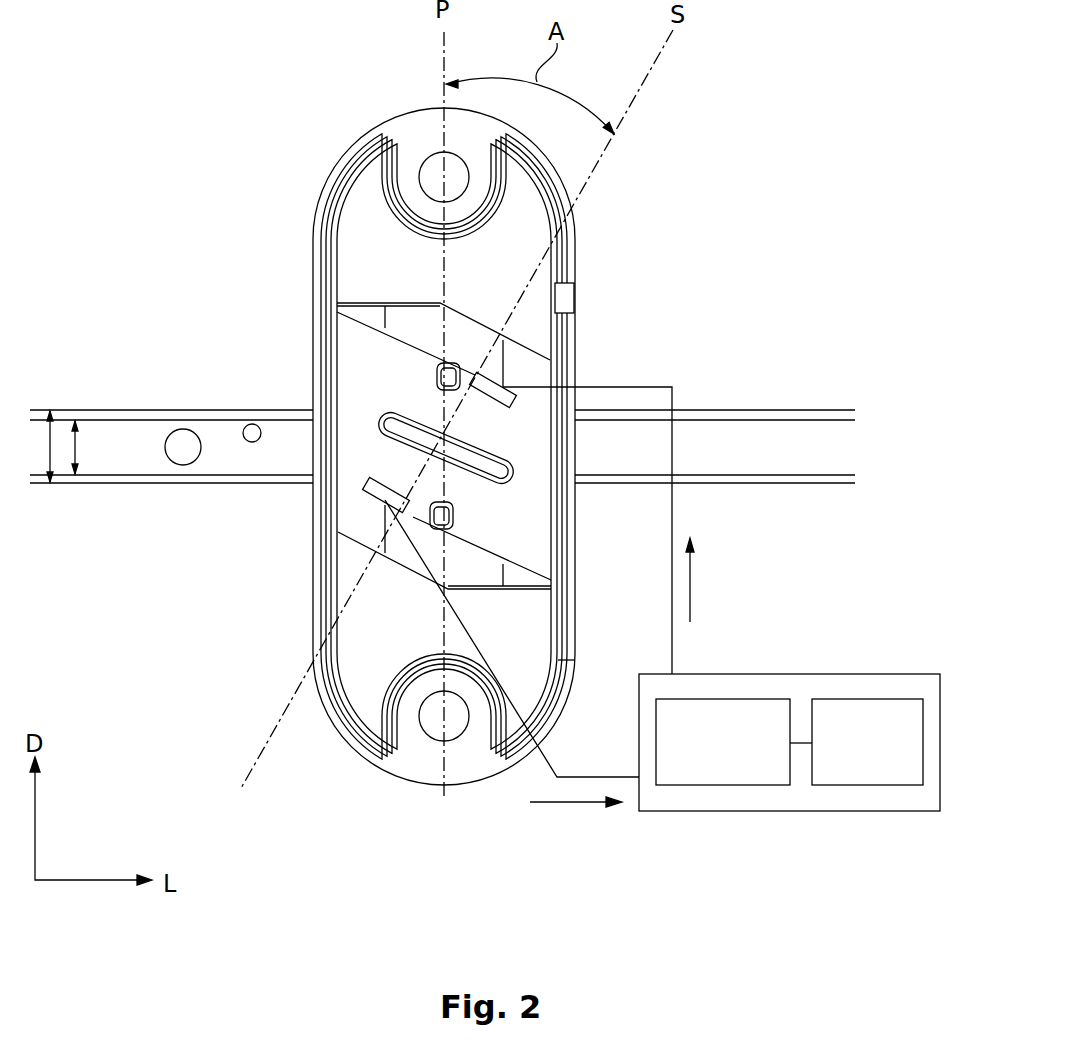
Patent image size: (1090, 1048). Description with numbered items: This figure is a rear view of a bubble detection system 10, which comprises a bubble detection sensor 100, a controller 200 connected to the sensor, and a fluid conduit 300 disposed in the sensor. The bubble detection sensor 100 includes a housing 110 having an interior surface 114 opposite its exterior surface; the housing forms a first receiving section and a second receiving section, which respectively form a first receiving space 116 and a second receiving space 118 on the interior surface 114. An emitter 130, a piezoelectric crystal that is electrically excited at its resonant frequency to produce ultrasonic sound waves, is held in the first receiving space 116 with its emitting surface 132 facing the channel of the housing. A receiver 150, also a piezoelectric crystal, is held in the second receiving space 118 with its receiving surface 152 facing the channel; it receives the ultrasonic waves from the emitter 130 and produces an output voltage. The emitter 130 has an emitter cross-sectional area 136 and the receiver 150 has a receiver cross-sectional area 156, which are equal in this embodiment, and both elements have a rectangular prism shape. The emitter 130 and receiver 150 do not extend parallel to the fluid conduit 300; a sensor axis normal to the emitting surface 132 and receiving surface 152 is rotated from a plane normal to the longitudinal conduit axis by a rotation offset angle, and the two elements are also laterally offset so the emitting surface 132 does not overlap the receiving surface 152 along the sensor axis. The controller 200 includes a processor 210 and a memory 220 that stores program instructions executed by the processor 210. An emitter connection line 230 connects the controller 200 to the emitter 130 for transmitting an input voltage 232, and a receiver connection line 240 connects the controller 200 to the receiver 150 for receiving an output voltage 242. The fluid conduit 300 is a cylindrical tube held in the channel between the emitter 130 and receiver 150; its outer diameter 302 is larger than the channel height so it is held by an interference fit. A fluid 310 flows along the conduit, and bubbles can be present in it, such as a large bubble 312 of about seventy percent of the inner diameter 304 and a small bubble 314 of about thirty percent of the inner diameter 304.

The bubble detection system 10 is at (707, 87).
The bubble detection sensor 100 is at (420, 446).
The housing 110 is at (387, 312).
The interior surface 114 is at (538, 240).
The first receiving space 116 is at (397, 313).
The second receiving space 118 is at (363, 513).
The emitter 130 is at (593, 403).
The emitter cross-sectional area 136 is at (593, 403).
The emitting surface 132 is at (492, 403).
The receiver 150 is at (284, 437).
The receiver cross-sectional area 156 is at (284, 437).
The receiving surface 152 is at (372, 485).
The controller 200 is at (789, 741).
The processor 210 is at (712, 787).
The memory 220 is at (862, 787).
The emitter connection line 230 is at (622, 386).
The input voltage 232 is at (698, 590).
The receiver connection line 240 is at (545, 763).
The output voltage 242 is at (577, 807).
The fluid conduit 300 is at (441, 432).
The outer diameter 302 is at (50, 440).
The inner diameter 304 is at (77, 443).
The fluid 310 is at (225, 430).
The large bubble 312 is at (182, 432).
The small bubble 314 is at (250, 426).